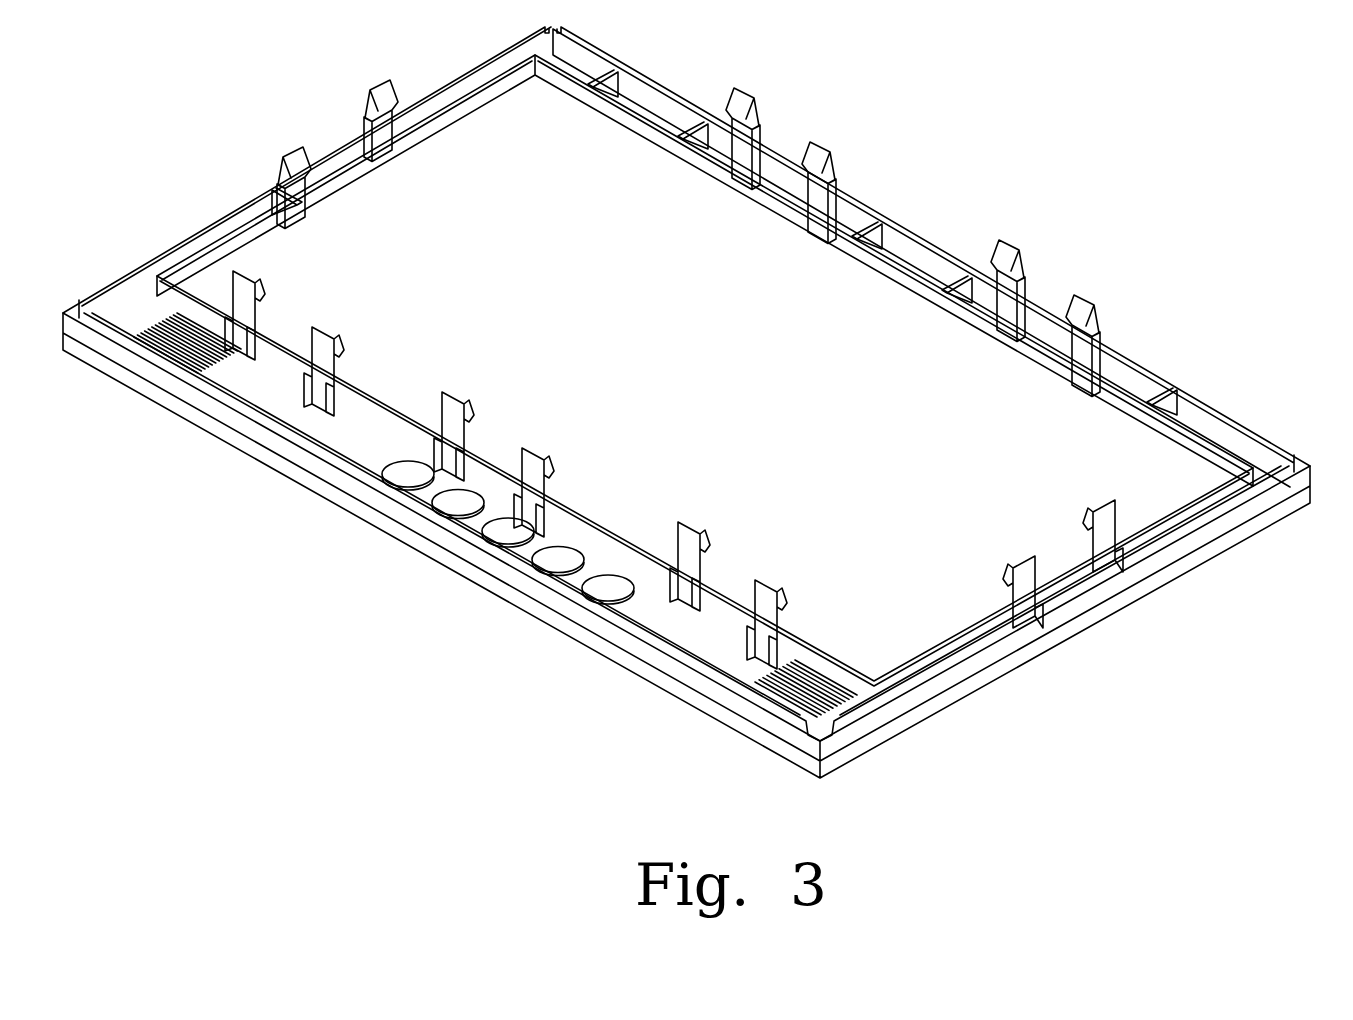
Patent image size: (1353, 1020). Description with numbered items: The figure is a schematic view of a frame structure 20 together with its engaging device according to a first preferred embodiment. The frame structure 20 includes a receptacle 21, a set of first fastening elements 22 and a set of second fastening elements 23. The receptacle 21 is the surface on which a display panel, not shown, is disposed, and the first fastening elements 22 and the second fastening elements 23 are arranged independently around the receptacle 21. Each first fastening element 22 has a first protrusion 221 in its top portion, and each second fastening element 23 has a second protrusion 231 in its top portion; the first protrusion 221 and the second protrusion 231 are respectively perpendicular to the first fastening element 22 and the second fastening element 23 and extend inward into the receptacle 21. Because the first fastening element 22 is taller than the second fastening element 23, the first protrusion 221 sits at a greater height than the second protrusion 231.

The frame structure 20 is at (1266, 493).
The receptacle 21 is at (1085, 420).
The first fastening element 22 is at (757, 124).
The second fastening element 23 is at (835, 186).
The first protrusion 221 is at (1012, 255).
The second protrusion 231 is at (1085, 310).